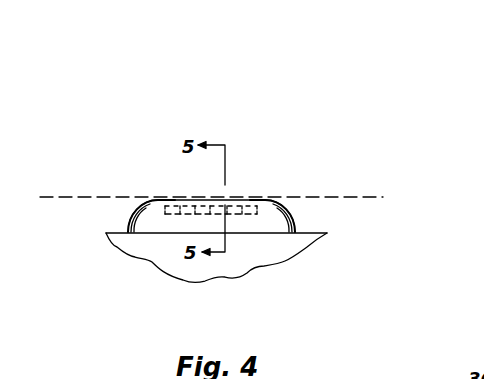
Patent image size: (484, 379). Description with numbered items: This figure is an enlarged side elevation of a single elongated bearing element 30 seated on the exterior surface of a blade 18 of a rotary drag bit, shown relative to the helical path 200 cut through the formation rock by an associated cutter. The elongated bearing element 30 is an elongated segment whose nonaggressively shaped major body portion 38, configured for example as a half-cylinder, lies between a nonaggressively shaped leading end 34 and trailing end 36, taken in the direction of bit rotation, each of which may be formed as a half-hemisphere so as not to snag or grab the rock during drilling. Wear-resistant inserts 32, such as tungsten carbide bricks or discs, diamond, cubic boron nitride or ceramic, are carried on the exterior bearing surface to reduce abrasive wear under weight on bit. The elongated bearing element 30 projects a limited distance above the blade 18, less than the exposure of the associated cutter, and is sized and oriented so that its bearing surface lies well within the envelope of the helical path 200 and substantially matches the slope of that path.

The blade 18 is at (265, 248).
The elongated bearing element 30 is at (245, 162).
The wear-resistant inserts 32 is at (210, 198).
The leading end 34 is at (284, 200).
The trailing end 36 is at (137, 210).
The major body portion 38 is at (183, 215).
The helical path 200 is at (366, 197).